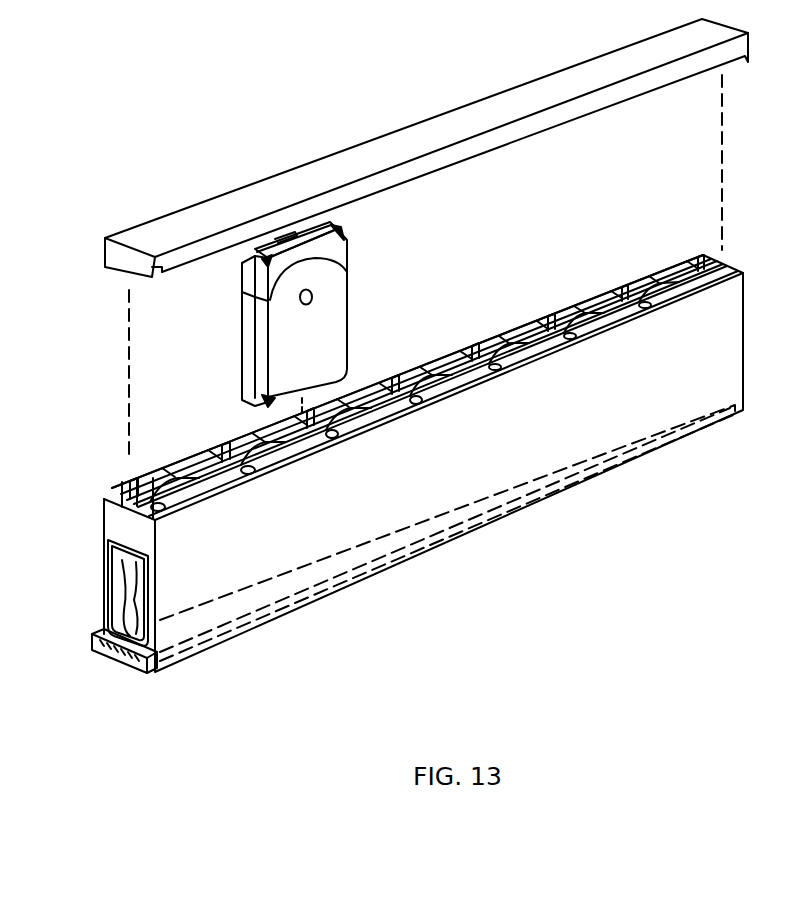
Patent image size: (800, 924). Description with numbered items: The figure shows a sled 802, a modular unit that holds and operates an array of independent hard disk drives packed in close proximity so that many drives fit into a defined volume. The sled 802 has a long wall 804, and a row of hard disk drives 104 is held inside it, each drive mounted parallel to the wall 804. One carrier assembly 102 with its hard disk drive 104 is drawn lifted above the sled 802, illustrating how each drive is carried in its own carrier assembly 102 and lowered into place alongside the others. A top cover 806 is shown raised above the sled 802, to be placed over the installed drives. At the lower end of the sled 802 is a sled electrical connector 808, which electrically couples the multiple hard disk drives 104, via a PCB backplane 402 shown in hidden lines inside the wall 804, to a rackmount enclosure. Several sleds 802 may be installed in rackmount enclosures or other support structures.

The carrier assembly 102 is at (358, 235).
The hard disk drive 104 is at (253, 334).
The PCB backplane 402 is at (627, 470).
The sled 802 is at (622, 588).
The wall 804 is at (700, 348).
The top cover 806 is at (218, 213).
The sled electrical connector 808 is at (115, 664).